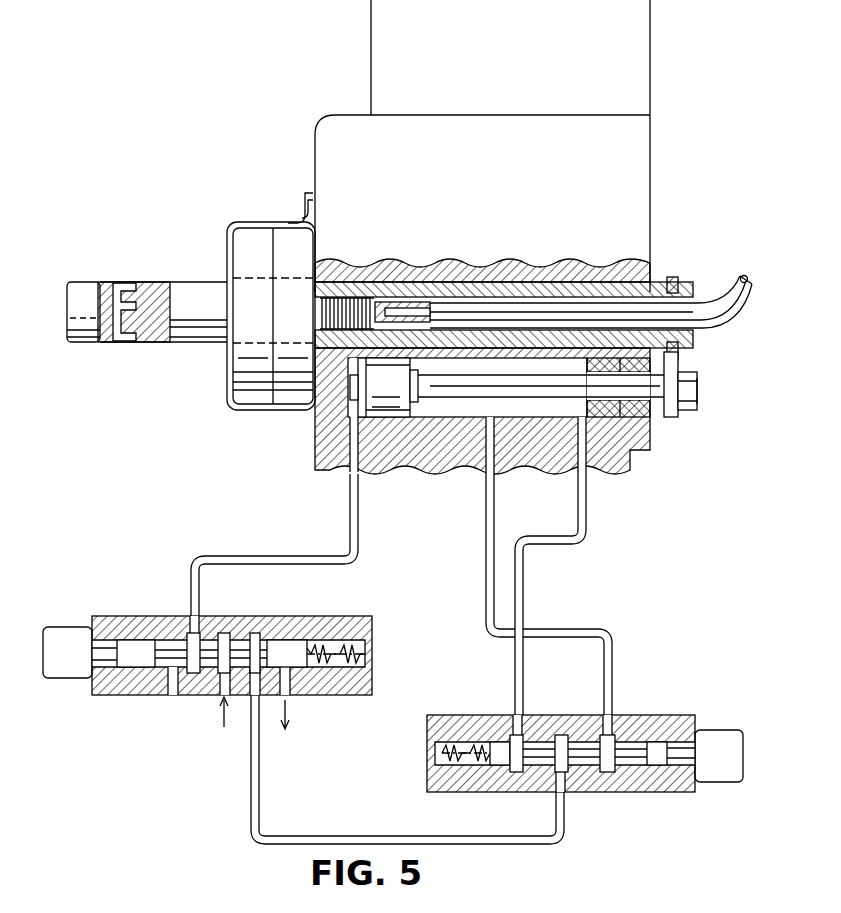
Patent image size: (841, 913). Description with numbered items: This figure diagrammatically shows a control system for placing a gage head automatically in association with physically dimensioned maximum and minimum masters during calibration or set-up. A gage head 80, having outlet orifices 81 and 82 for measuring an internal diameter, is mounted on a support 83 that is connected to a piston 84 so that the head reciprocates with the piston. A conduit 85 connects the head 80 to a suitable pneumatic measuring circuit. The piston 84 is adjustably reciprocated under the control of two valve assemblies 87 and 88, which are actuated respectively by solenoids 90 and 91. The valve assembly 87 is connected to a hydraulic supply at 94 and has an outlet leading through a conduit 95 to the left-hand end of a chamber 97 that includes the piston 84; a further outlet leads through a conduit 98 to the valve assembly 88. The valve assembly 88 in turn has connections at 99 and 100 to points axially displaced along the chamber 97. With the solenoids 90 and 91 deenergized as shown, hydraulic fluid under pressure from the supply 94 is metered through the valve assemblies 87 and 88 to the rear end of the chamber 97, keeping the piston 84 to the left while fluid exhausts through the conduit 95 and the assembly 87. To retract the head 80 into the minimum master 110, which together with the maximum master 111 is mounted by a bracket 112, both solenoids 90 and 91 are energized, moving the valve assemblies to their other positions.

The gage head 80 is at (188, 344).
The outlet orifice 81 is at (125, 282).
The outlet orifice 82 is at (123, 342).
The support 83 is at (652, 288).
The piston 84 is at (392, 414).
The conduit 85 is at (728, 308).
The valve assembly 87 is at (232, 682).
The valve assembly 88 is at (658, 802).
The solenoid 90 is at (52, 663).
The solenoid 91 is at (732, 767).
The hydraulic supply 94 is at (218, 688).
The conduit 95 is at (190, 588).
The chamber 97 is at (546, 412).
The conduit 98 is at (317, 836).
The connection 99 is at (514, 684).
The connection 100 is at (614, 692).
The minimum master 110 is at (247, 304).
The maximum master 111 is at (290, 245).
The bracket 112 is at (313, 229).